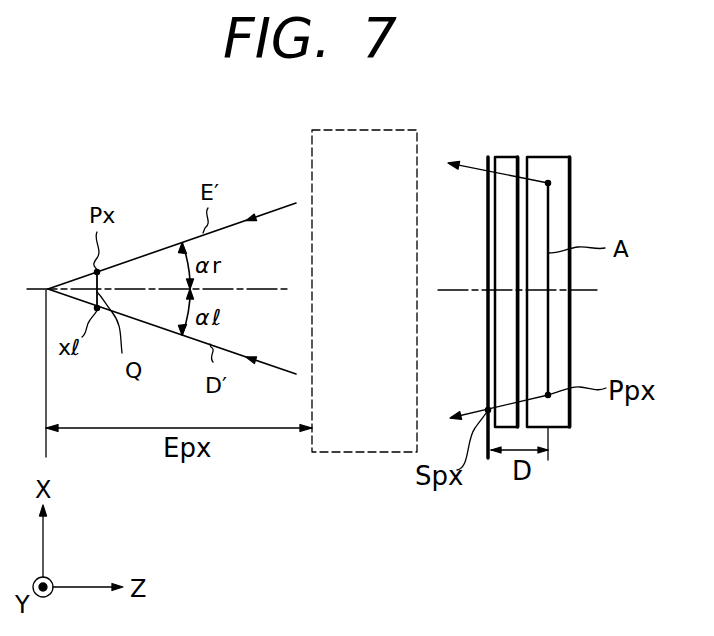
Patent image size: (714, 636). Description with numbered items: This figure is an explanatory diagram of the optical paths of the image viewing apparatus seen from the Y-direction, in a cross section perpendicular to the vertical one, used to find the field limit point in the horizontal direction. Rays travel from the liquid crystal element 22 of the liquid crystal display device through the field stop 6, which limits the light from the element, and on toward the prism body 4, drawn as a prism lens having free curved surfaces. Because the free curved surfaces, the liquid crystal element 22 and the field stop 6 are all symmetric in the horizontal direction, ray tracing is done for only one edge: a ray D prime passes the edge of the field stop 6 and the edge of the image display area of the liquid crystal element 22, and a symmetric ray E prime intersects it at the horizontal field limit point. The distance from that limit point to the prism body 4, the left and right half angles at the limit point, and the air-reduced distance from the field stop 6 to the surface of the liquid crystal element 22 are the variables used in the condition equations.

The prism body 4 is at (368, 130).
The field stop 6 is at (488, 157).
The liquid crystal element 22 is at (548, 198).